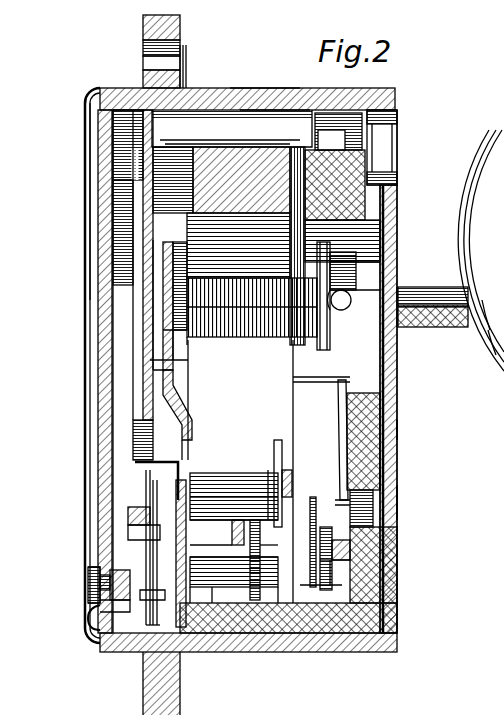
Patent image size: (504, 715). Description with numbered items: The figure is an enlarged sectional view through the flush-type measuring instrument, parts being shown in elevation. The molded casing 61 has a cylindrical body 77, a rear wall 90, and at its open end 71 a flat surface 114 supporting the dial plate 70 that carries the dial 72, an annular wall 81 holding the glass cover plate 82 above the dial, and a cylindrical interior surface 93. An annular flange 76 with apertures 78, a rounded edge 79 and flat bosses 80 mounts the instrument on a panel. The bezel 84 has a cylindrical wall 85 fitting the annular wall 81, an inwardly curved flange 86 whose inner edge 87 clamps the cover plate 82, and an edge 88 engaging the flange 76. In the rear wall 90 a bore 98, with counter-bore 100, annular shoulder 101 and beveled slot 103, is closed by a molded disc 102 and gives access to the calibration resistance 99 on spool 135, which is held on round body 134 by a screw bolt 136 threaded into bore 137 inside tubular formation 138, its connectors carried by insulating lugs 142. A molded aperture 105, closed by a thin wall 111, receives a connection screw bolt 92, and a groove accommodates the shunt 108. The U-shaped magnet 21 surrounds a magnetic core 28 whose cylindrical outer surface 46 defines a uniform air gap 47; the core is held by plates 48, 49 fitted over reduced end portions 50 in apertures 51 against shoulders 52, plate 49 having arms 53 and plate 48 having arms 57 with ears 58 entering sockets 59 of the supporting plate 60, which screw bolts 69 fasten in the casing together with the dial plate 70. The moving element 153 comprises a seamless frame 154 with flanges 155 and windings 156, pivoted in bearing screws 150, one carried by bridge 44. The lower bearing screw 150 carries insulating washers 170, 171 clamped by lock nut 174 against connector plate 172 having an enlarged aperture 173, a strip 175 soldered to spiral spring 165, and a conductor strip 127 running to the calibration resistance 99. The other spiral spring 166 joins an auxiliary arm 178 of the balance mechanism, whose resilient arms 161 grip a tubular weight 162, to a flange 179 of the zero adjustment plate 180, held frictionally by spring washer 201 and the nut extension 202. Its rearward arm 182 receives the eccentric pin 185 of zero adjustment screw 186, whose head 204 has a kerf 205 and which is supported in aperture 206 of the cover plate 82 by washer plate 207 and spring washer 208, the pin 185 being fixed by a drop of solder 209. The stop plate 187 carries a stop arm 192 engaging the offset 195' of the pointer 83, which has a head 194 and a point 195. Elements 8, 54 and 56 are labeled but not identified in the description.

The dial 8 is at (488, 382).
The magnet 21 is at (232, 128).
The core 28 is at (250, 500).
The bridge 44 is at (396, 585).
The cylindrical outer surface 46 is at (238, 495).
The air gap 47 is at (245, 585).
The supporting plate 48 is at (233, 475).
The supporting plate 49 is at (340, 458).
The reduced end portions 50 is at (305, 510).
The apertures 51 is at (305, 500).
The shoulders 52 is at (262, 542).
The outwardly projecting arms 53 is at (285, 515).
The cross member 54 is at (300, 515).
The link 56 is at (272, 480).
The outwardly extending arms 57 is at (212, 600).
The upwardly turned ends 58 is at (195, 438).
The sockets 59 is at (197, 445).
The supporting plate 60 is at (163, 380).
The casing 61 is at (240, 88).
The screw bolts 69 is at (137, 427).
The dial plate 70 is at (140, 242).
The open end 71 is at (184, 80).
The dial 72 is at (148, 220).
The annular flange 76 is at (181, 45).
The cylindrical body 77 is at (250, 92).
The apertures 78 is at (190, 62).
The rounded edge 79 is at (143, 24).
The flat boss 80 is at (182, 18).
The annular wall 81 is at (118, 92).
The cover plate 82 is at (120, 178).
The pointer 83 is at (125, 200).
The bezel 84 is at (86, 95).
The cylindrical wall 85 is at (128, 92).
The inwardly curved flange 86 is at (83, 102).
The inner edge 87 is at (95, 115).
The edge 88 is at (140, 92).
The rear wall 90 is at (386, 468).
The connection screw bolt 92 is at (430, 326).
The cylindrical surface 93 is at (105, 130).
The bore 98 is at (395, 383).
The calibration resistance 99 is at (180, 350).
The counter-bore 100 is at (383, 216).
The annular shoulder 101 is at (390, 196).
The molded disc 102 is at (380, 270).
The beveled slot 103 is at (392, 405).
The molded aperture 105 is at (397, 115).
The shunt 108 is at (302, 148).
The thin wall 111 is at (368, 130).
The flat surface 114 is at (190, 95).
The conductor strip 127 is at (396, 432).
The round body 134 is at (165, 265).
The calibration resistance spool 135 is at (170, 340).
The screw bolt 136 is at (345, 298).
The bore 137 is at (178, 292).
The tubular formation 138 is at (160, 317).
The insulating lugs 142 is at (345, 302).
The bearing screw 150 is at (374, 530).
The moving element 153 is at (340, 498).
The sheet metal frame 154 is at (234, 538).
The flanges 155 is at (226, 532).
The windings 156 is at (250, 559).
The resilient arms 161 is at (160, 660).
The tubular weight 162 is at (135, 650).
The spiral spring 165 is at (396, 598).
The spiral spring 166 is at (236, 553).
The insulating washer 170 is at (386, 480).
The insulating washer 171 is at (396, 495).
The connector plate 172 is at (352, 566).
The enlarged aperture 173 is at (352, 550).
The lock nut 174 is at (396, 512).
The upwardly extending strip 175 is at (333, 585).
The auxiliary arm 178 is at (157, 481).
The downwardly projecting flange 179 is at (150, 480).
The zero adjustment plate 180 is at (140, 500).
The rearwardly projecting arm 182 is at (147, 595).
The eccentric pin 185 is at (150, 612).
The zero adjustment screw 186 is at (105, 604).
The stop plate 187 is at (130, 518).
The stop arm 192 is at (137, 495).
The head 194 is at (492, 348).
The point 195 is at (469, 330).
The offset 195' is at (199, 405).
The spring washer 201 is at (135, 512).
The reduced extension 202 is at (132, 528).
The head 204 is at (88, 592).
The kerf 205 is at (379, 707).
The aperture 206 is at (110, 575).
The washer plate 207 is at (118, 568).
The spring washer 208 is at (95, 625).
The drop of solder 209 is at (90, 583).